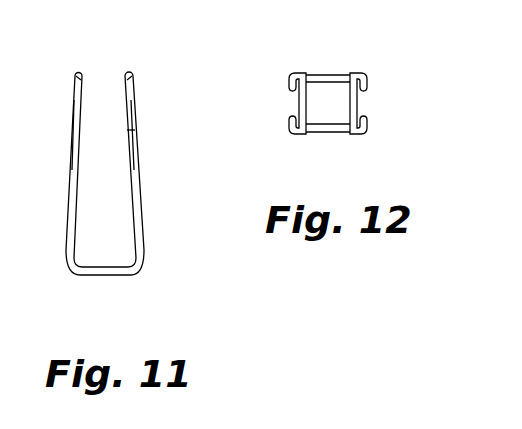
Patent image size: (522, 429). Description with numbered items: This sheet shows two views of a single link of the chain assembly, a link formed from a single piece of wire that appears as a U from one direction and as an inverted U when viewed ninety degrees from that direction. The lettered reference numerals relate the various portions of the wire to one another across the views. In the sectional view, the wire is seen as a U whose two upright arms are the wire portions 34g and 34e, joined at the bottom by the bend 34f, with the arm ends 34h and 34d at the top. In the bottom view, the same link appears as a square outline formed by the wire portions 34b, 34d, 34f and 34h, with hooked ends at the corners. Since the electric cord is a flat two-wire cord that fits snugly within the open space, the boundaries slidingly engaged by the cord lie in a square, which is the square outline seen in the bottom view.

In FIG. 12, the wire portion of link 34b is at (298, 92).
In FIG. 11, the wire portion of link 34d is at (157, 72).
In FIG. 12, the wire portion of link 34d is at (317, 74).
In FIG. 11, the wire portion of link 34e is at (135, 167).
In FIG. 11, the wire portion of link 34f is at (108, 275).
In FIG. 12, the wire portion of link 34f is at (366, 114).
In FIG. 11, the wire portion of link 34g is at (72, 163).
In FIG. 11, the wire portion of link 34h is at (78, 78).
In FIG. 12, the wire portion of link 34h is at (330, 133).